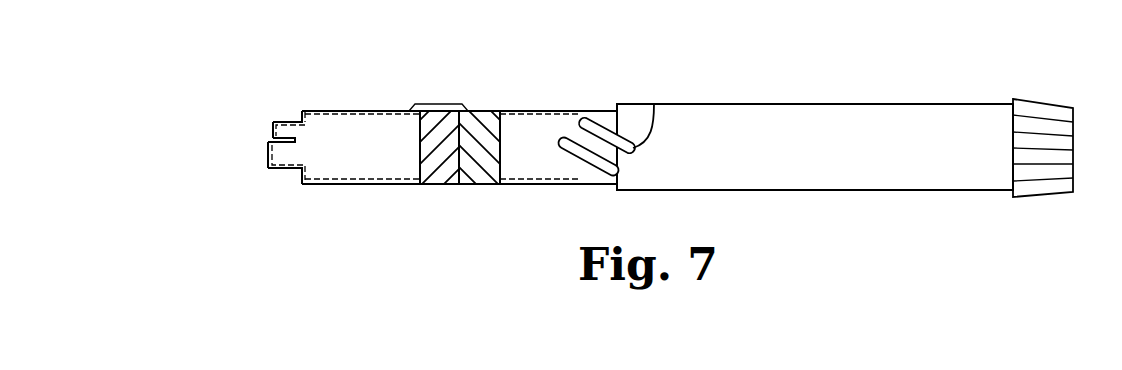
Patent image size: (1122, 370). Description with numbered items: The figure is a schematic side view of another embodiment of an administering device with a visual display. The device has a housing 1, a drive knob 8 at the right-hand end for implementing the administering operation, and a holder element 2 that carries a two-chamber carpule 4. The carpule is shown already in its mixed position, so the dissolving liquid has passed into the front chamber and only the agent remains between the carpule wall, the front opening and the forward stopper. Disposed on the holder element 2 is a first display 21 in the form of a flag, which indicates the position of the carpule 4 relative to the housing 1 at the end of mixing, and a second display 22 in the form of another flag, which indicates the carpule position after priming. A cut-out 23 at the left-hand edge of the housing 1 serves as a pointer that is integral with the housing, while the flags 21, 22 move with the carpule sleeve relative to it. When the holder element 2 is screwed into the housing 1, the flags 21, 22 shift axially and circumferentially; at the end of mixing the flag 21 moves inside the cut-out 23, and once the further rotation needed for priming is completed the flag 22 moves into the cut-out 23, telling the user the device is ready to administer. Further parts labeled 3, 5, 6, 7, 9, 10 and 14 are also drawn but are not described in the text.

The housing 1 is at (937, 125).
The holder element 2 is at (370, 147).
The injection device 3 is at (312, 49).
The two-chamber carpule 4 is at (301, 174).
The cartridge 5 is at (353, 184).
The first piston portion 6 is at (443, 176).
The second piston portion 7 is at (478, 178).
The drive knob 8 is at (1074, 118).
The needle 9 is at (273, 137).
The piston 10 is at (450, 111).
The tip 14 is at (268, 155).
The first display 21 is at (598, 128).
The second display 22 is at (570, 138).
The cut-out 23 is at (655, 104).